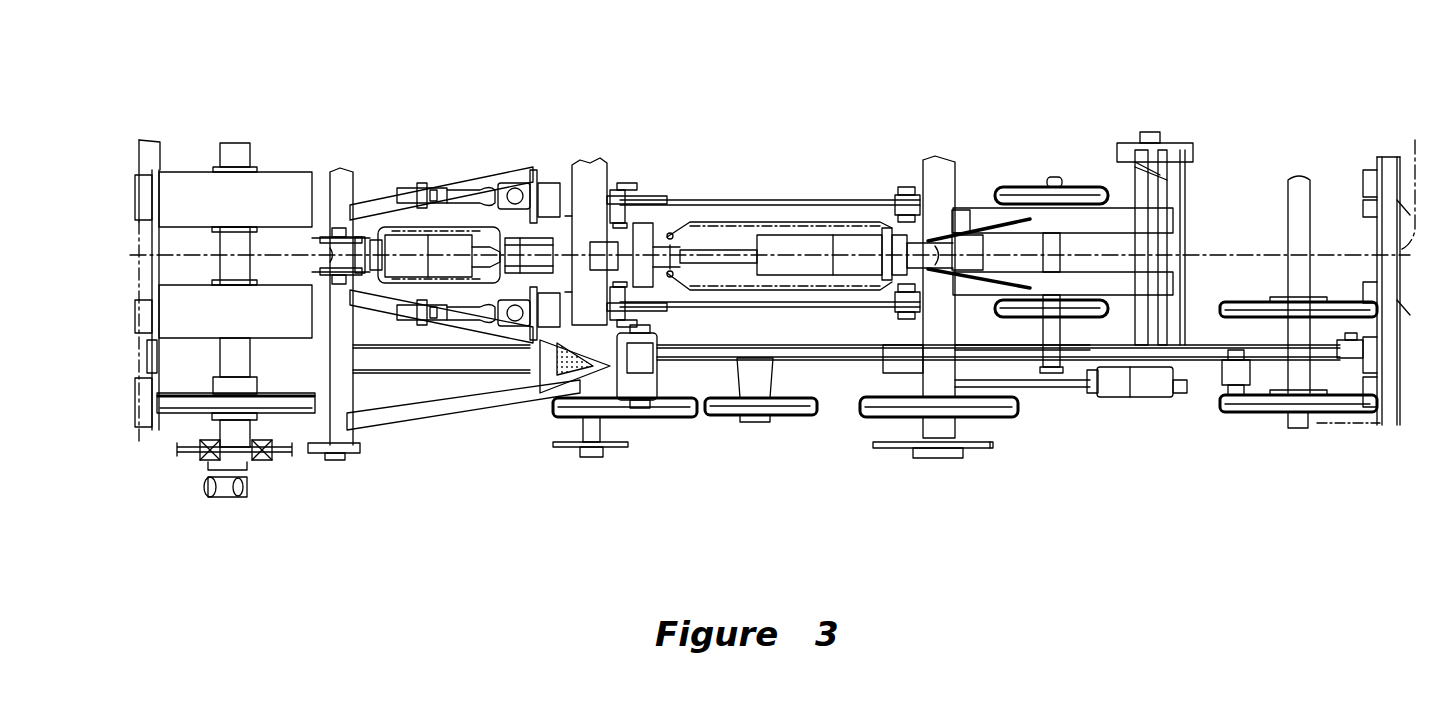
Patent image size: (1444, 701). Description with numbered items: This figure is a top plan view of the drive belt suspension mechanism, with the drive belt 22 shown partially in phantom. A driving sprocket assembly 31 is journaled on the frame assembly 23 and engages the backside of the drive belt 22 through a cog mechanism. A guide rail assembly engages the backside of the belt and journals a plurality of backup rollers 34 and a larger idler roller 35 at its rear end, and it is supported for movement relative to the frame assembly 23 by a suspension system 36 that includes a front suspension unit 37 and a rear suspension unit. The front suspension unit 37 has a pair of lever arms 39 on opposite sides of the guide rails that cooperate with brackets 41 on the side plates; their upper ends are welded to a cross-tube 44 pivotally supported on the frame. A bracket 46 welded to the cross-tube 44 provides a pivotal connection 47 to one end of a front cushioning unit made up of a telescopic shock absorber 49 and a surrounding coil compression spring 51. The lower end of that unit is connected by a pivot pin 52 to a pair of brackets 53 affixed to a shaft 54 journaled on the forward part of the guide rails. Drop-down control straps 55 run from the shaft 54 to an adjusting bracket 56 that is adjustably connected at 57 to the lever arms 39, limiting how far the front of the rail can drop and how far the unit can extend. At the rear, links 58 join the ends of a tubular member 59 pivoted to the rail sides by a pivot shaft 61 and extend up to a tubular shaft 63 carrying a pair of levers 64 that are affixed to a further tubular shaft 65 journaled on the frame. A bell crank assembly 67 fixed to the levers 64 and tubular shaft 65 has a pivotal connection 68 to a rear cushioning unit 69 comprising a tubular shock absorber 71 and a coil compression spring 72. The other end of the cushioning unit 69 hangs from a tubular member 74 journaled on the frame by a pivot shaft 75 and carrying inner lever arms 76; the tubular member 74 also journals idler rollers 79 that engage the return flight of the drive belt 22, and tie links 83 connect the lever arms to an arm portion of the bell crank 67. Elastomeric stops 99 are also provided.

The drive belt 22 is at (1413, 165).
The frame assembly 23 is at (995, 448).
The driving sprocket assembly 31 is at (280, 172).
The backup rollers 34 is at (1078, 185).
The idler roller 35 is at (1258, 300).
The suspension system 36 is at (872, 93).
The front suspension unit 37 is at (468, 125).
The lever arms 39 is at (390, 185).
The brackets 41 is at (620, 190).
The cross-tube 44 is at (338, 378).
The bracket 46 is at (322, 272).
The pivotal connection 47 is at (340, 235).
The telescopic shock absorber 49 is at (452, 240).
The coil compression spring 51 is at (378, 420).
The pivot pin 52 is at (533, 170).
The brackets 53 is at (548, 200).
The shaft 54 is at (460, 192).
The drop-down control straps 55 is at (512, 180).
The adjusting bracket 56 is at (400, 340).
The adjustment 57 is at (415, 190).
The links 58 is at (1150, 160).
The tubular member 59 is at (1185, 195).
The pivot shaft 61 is at (1145, 132).
The tubular shaft 63 is at (1150, 240).
The levers 64 is at (1120, 220).
The tubular shaft 65 is at (945, 330).
The bell crank assembly 67 is at (1008, 225).
The pivotal connection 68 is at (940, 165).
The cushioning unit 69 is at (793, 232).
The tubular shock absorber 71 is at (835, 235).
The coil compression spring 72 is at (722, 210).
The tubular member 74 is at (590, 168).
The pivot shaft 75 is at (612, 420).
The inner lever arms 76 is at (650, 225).
The idler rollers 79 is at (560, 390).
The tie links 83 is at (835, 375).
The elastomeric stops 99 is at (590, 440).